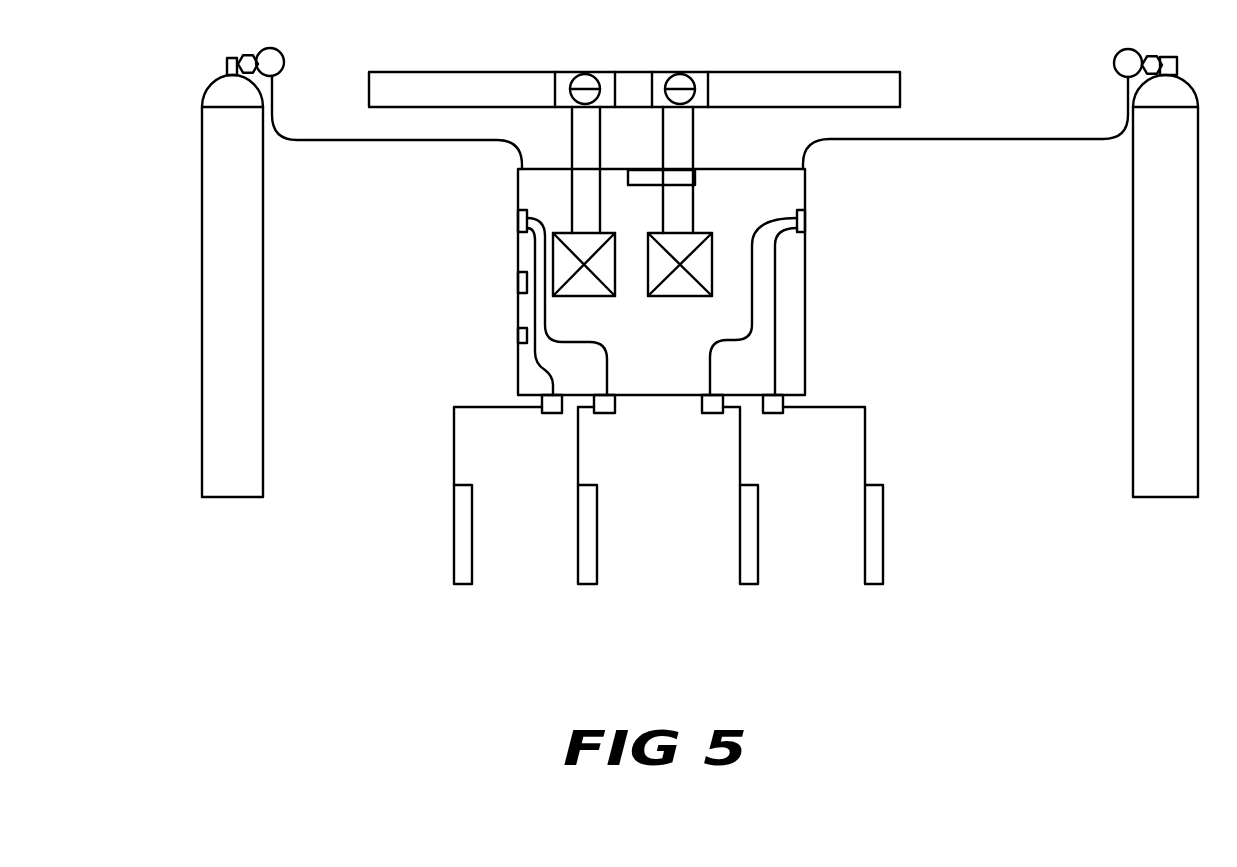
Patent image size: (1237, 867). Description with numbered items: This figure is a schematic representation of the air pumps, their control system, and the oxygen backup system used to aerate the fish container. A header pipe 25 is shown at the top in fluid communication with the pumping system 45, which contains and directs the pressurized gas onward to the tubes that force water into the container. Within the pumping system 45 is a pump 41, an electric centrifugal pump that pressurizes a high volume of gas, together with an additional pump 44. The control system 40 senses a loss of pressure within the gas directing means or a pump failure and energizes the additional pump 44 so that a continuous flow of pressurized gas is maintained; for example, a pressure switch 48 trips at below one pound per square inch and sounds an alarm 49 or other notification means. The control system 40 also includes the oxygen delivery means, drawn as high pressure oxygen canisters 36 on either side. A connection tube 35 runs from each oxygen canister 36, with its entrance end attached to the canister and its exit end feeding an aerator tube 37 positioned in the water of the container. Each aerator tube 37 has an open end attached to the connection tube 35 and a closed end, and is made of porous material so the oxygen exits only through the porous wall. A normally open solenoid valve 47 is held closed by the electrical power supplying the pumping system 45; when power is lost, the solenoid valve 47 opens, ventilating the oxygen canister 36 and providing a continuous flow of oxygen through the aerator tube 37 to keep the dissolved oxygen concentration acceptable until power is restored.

The header pipe 25 is at (765, 71).
The connection tube 35 is at (337, 140).
The oxygen canister 36 is at (202, 348).
The aerator tube 37 is at (587, 582).
The control system 40 is at (823, 313).
The pump 41 is at (700, 232).
The additional pump 44 is at (607, 232).
The pumping system 45 is at (705, 163).
The solenoid valve 47 is at (518, 223).
The pressure switch 48 is at (518, 287).
The alarm 49 is at (518, 335).